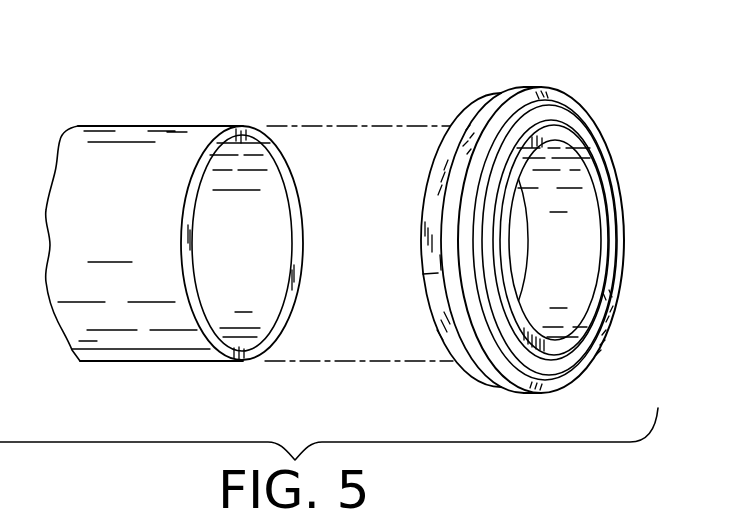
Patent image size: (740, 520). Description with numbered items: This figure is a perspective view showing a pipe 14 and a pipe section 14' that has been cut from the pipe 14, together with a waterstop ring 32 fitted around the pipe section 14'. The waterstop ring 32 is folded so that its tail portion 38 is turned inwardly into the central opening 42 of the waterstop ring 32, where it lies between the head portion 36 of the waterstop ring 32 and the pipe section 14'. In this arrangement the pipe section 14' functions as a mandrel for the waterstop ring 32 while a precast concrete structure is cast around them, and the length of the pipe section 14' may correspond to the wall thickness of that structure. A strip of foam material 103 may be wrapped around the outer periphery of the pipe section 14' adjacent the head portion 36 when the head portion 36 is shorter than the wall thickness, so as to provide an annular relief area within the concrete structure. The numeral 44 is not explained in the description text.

The pipe 14 is at (249, 211).
The pipe section 14' is at (606, 236).
The waterstop ring 32 is at (571, 82).
The head portion 36 is at (494, 100).
The tail portion 38 is at (598, 138).
The central opening 42 is at (580, 314).
The rim 44 is at (530, 97).
The strip of foam material 103 is at (425, 243).